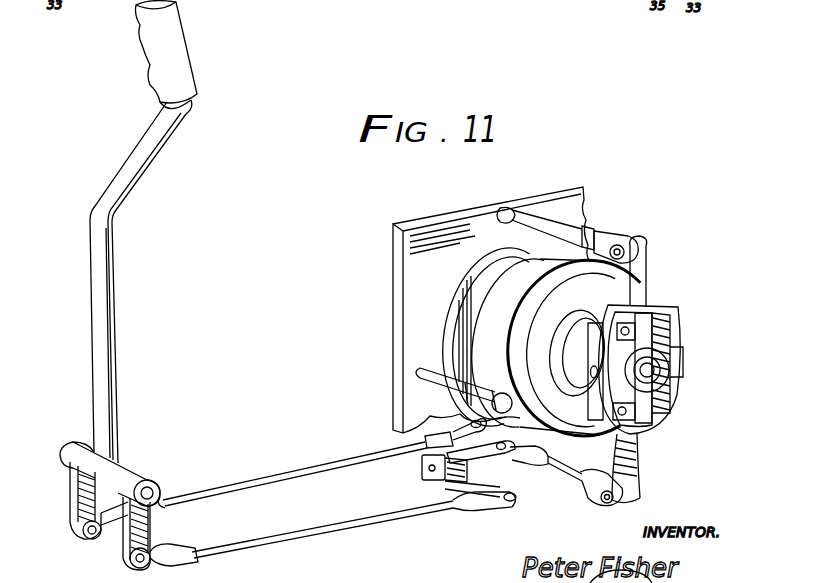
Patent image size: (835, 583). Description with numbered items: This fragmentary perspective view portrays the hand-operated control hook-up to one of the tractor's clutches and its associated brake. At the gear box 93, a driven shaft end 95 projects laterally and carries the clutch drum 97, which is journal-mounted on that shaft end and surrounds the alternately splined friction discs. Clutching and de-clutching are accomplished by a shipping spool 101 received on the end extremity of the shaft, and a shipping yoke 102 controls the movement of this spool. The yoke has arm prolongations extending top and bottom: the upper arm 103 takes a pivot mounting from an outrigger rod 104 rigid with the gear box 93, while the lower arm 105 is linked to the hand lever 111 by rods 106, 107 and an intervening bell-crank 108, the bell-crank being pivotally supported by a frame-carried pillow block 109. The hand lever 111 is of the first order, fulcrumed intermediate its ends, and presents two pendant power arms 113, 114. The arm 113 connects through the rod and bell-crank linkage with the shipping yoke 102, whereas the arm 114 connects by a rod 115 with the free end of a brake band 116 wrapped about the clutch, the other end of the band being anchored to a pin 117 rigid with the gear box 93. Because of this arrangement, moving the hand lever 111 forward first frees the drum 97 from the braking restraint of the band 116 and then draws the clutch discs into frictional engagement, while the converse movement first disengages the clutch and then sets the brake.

The gear box 93 is at (395, 370).
The driven shaft end 95 is at (656, 378).
The drum 97 is at (480, 318).
The shipping spool 101 is at (656, 360).
The shipping yoke 102 is at (683, 346).
The arm of shipping yoke 103 is at (647, 279).
The outrigger rod 104 is at (613, 242).
The arm of shipping yoke 105 is at (641, 456).
The rod 106 is at (557, 471).
The rod 107 is at (363, 520).
The bell-crank 108 is at (505, 462).
The pillow block 109 is at (420, 470).
The hand lever 111 is at (103, 256).
The pendant power arm 113 is at (130, 537).
The pendant power arm 114 is at (80, 498).
The rod 115 is at (242, 488).
The brake band 116 is at (513, 289).
The pin 117 is at (445, 385).